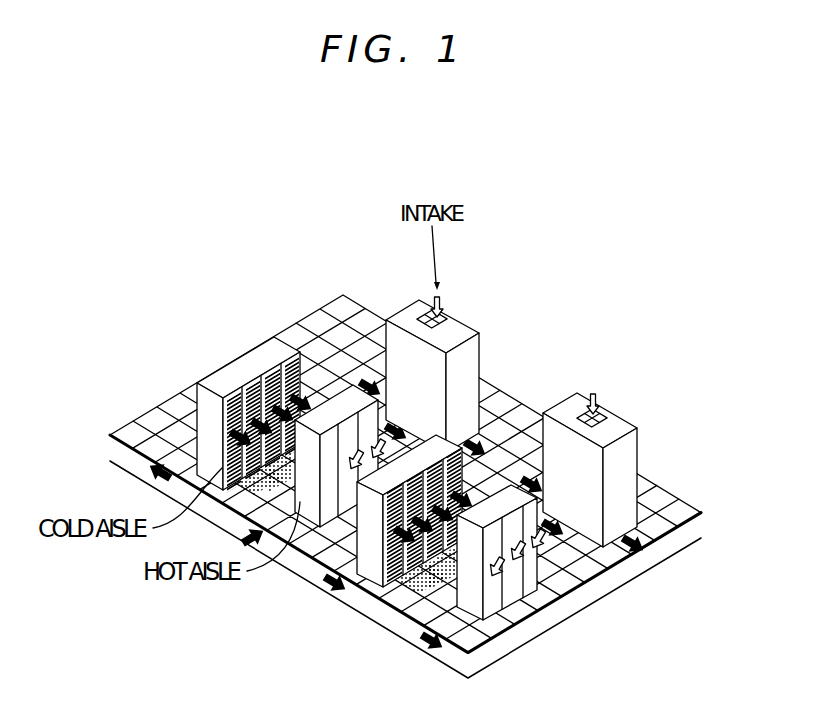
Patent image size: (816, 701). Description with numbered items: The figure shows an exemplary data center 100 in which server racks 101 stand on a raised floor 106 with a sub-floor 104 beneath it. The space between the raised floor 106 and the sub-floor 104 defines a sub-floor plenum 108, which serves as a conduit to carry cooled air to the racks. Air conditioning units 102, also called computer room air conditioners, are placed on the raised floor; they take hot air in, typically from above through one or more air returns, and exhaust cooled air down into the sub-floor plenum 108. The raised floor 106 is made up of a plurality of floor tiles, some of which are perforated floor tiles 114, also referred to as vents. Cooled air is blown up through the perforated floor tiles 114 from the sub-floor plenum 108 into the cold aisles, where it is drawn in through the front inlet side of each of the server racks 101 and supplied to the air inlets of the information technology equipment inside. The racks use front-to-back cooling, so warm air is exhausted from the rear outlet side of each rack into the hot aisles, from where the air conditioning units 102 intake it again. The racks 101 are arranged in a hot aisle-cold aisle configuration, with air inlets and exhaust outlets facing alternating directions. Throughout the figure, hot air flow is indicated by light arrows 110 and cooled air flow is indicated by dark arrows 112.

The data center 100 is at (405, 114).
The server racks 101 is at (232, 368).
The air conditioning units (ACUs) 102 is at (482, 320).
The sub-floor 104 is at (402, 640).
The raised floor 106 is at (573, 593).
The sub-floor plenum 108 is at (670, 543).
The light arrows 110 is at (606, 390).
The dark arrows 112 is at (485, 437).
The perforated floor tiles 114 is at (397, 587).